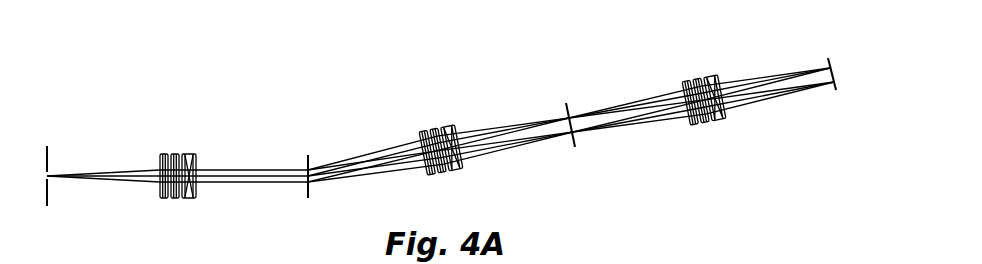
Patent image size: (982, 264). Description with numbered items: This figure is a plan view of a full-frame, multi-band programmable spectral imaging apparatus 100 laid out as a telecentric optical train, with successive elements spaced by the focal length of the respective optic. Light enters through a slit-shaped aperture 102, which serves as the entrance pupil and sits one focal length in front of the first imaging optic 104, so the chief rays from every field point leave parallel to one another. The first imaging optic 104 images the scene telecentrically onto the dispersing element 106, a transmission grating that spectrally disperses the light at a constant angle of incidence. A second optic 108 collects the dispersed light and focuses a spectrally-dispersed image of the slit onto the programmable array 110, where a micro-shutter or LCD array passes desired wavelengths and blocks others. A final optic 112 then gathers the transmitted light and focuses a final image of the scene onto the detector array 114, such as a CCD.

The full-frame, multi-band programmable spectral imaging apparatus 100 is at (280, 51).
The slit-shaped aperture 102 is at (48, 143).
The first imaging optic 104 is at (185, 152).
The dispersing element 106 is at (310, 153).
The second optic 108 is at (437, 126).
The programmable array 110 is at (566, 103).
The final optic 112 is at (707, 78).
The detector array 114 is at (838, 88).